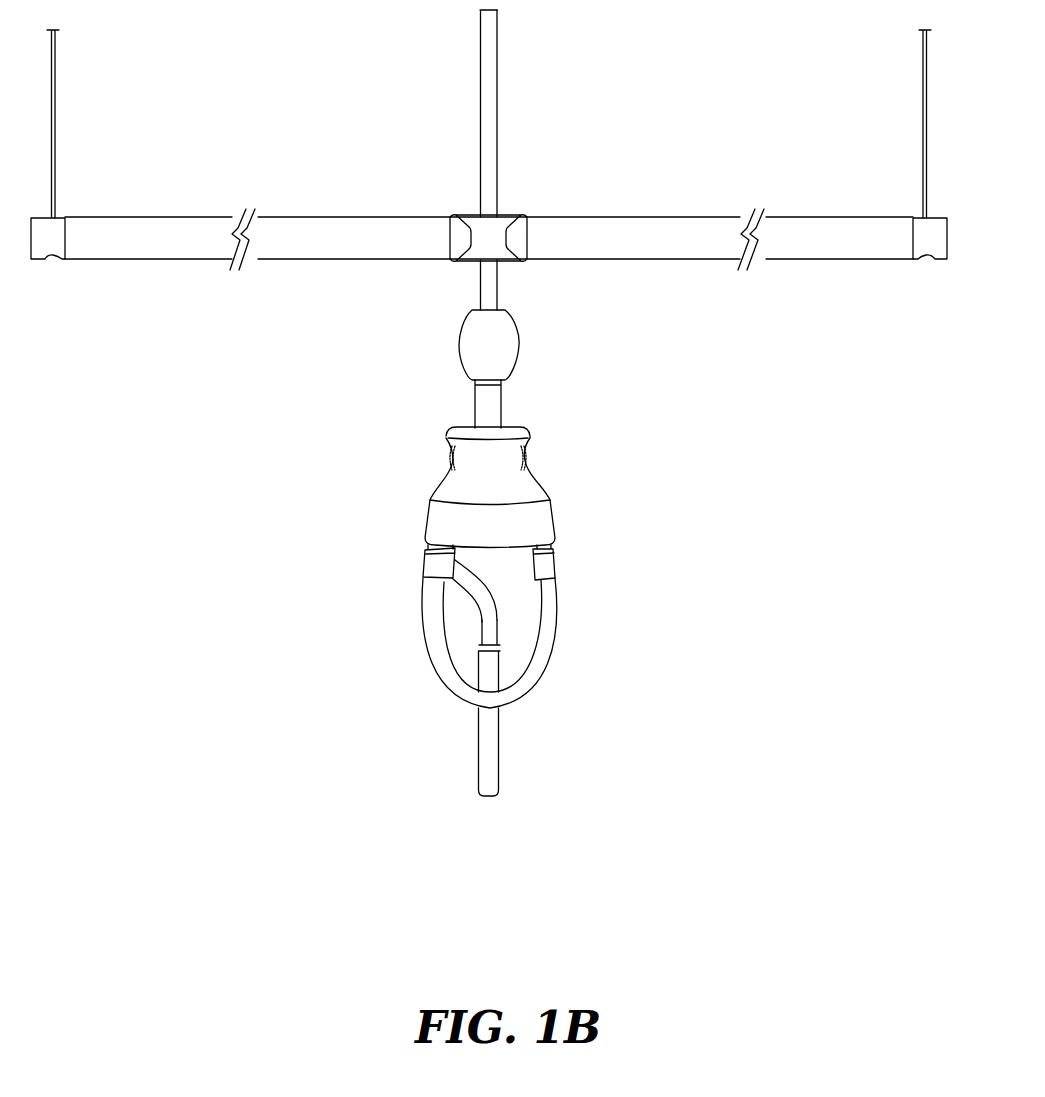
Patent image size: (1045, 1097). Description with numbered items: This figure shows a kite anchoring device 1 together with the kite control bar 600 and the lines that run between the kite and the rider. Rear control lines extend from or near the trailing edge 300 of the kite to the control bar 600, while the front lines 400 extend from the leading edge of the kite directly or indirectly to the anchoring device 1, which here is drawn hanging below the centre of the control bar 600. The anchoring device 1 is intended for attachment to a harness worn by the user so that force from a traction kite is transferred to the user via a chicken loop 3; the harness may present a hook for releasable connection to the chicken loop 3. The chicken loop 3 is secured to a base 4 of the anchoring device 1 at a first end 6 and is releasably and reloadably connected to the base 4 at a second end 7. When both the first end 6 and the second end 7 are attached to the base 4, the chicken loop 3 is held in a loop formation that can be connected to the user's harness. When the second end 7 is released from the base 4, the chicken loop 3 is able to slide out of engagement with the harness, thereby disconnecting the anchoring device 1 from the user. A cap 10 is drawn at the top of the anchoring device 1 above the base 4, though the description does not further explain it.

The trailing edge 300 is at (55, 105).
The front lines 400 is at (497, 93).
The control bar 600 is at (655, 225).
The anchoring device 1 is at (534, 553).
The cap 10 is at (512, 441).
The base 4 is at (541, 522).
The first end 6 is at (420, 545).
The second end 7 is at (570, 546).
The chicken loop 3 is at (555, 627).